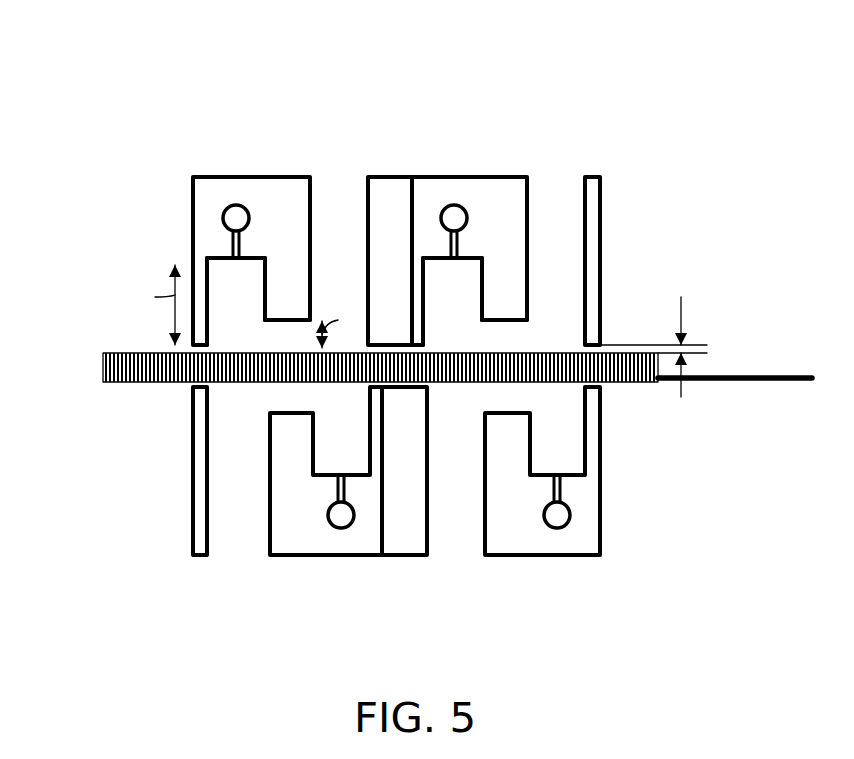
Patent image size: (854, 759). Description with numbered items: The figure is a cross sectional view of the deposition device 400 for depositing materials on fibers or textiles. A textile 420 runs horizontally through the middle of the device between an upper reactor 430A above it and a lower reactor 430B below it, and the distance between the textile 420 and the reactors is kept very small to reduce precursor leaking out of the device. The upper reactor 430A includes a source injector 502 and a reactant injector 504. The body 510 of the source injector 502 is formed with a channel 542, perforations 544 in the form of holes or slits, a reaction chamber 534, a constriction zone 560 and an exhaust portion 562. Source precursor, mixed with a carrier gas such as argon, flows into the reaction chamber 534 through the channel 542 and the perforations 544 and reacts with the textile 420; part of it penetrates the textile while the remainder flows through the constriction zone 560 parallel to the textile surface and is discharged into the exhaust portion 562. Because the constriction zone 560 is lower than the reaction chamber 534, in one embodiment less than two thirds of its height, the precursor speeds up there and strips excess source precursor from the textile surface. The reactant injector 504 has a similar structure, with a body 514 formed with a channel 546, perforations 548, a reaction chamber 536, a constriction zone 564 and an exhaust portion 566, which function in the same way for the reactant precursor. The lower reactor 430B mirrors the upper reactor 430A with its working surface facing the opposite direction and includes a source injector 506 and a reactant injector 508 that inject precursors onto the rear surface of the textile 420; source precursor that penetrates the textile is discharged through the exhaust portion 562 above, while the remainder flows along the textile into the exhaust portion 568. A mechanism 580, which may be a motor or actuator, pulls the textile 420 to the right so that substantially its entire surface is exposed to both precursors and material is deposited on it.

The deposition device 400 is at (588, 73).
The textile 420 is at (35, 367).
The upper reactor 430A is at (605, 123).
The lower reactor 430B is at (610, 620).
The source injector 502 is at (285, 158).
The reactant injector 504 is at (458, 158).
The source injector 506 is at (262, 573).
The reactant injector 508 is at (532, 573).
The body 510 is at (304, 211).
The body 514 is at (519, 206).
The reaction chamber 534 is at (254, 301).
The reaction chamber 536 is at (474, 296).
The channel 542 is at (224, 214).
The perforations 544 is at (232, 242).
The channel 546 is at (446, 216).
The perforations 548 is at (460, 243).
The constriction zone 560 is at (287, 335).
The exhaust portion 562 is at (369, 261).
The constriction zone 564 is at (505, 335).
The exhaust portion 566 is at (567, 261).
The exhaust portion 568 is at (226, 471).
The mechanism for moving the textile 580 is at (777, 423).